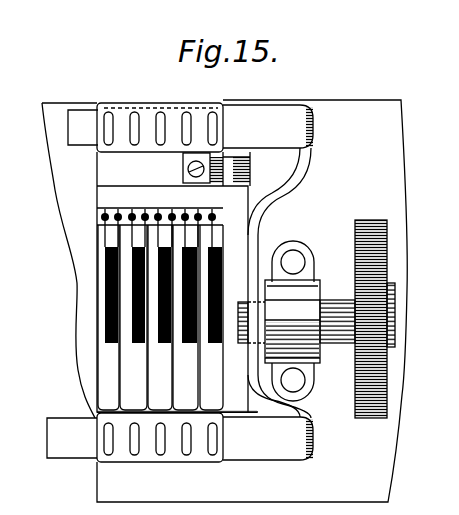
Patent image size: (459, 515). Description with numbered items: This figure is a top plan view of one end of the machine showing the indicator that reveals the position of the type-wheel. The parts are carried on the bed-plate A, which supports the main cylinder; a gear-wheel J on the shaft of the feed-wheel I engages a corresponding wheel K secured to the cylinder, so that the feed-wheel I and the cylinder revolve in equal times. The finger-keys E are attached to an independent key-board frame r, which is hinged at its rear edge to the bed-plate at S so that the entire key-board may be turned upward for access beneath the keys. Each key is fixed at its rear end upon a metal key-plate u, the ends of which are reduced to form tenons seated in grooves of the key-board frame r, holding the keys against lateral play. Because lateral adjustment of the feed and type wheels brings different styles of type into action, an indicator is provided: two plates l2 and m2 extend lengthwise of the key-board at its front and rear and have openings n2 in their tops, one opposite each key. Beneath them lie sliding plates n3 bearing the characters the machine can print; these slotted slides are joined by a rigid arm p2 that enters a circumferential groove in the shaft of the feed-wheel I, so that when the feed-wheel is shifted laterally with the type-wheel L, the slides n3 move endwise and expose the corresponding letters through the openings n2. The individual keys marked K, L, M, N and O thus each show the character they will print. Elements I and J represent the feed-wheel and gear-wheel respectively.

The bed-plate A is at (48, 193).
The plate l2 is at (150, 109).
The openings n2 is at (109, 146).
The sliding plates n3 is at (68, 122).
The hinge S is at (216, 169).
The key-board frame r is at (177, 282).
The key-plate u is at (158, 228).
The wheel K is at (108, 317).
The type-wheel L is at (133, 317).
The key M is at (160, 317).
The key N is at (185, 317).
The key O is at (211, 317).
The finger-keys E is at (140, 358).
The plate m2 is at (173, 462).
The rigid arm p2 is at (286, 184).
The feed-wheel I is at (298, 316).
The gear-wheel J is at (375, 319).